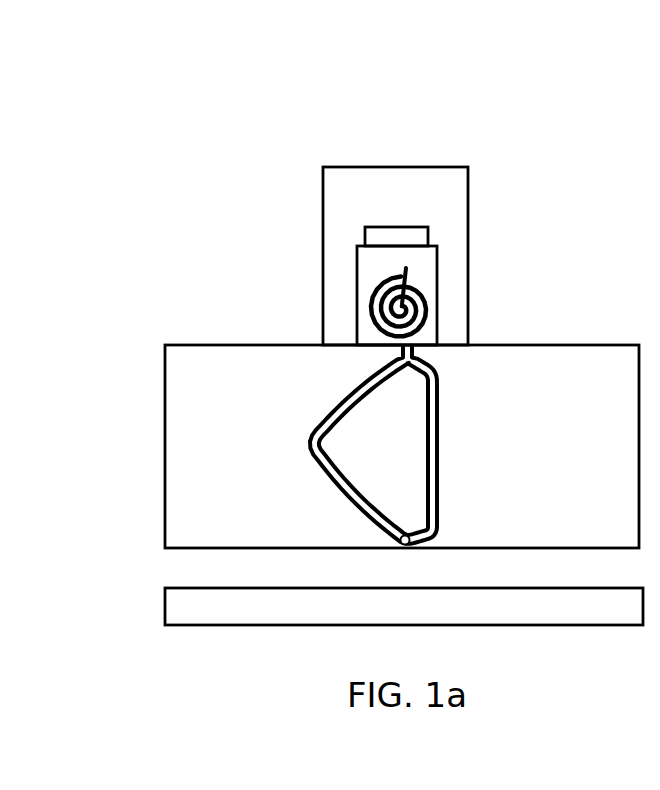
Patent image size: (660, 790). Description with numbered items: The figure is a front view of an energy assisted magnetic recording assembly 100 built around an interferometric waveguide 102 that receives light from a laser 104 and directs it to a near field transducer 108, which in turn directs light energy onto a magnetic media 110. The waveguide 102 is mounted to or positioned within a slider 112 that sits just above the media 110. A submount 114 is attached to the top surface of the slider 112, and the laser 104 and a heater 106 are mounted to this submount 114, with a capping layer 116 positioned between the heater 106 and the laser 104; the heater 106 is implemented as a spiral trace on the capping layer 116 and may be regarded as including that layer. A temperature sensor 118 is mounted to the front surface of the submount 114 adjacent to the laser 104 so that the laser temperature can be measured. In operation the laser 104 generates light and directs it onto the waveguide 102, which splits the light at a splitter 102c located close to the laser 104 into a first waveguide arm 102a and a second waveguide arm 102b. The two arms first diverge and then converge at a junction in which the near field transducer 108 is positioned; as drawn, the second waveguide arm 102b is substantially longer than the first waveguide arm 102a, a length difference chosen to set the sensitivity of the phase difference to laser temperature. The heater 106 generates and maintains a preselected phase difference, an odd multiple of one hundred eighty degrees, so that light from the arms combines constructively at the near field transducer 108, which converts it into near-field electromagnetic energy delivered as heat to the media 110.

The energy assisted magnetic recording (EAMR) assembly 100 is at (512, 102).
The interferometric waveguide 102 is at (445, 400).
The first waveguide arm 102a is at (440, 487).
The second waveguide arm 102b is at (357, 403).
The splitter 102c is at (397, 352).
The laser 104 is at (443, 327).
The heater 106 is at (367, 307).
The near field transducer (NFT) 108 is at (405, 533).
The magnetic media 110 is at (490, 618).
The slider 112 is at (597, 411).
The submount 114 is at (393, 167).
The capping layer 116 is at (368, 260).
The temperature sensor 118 is at (428, 233).